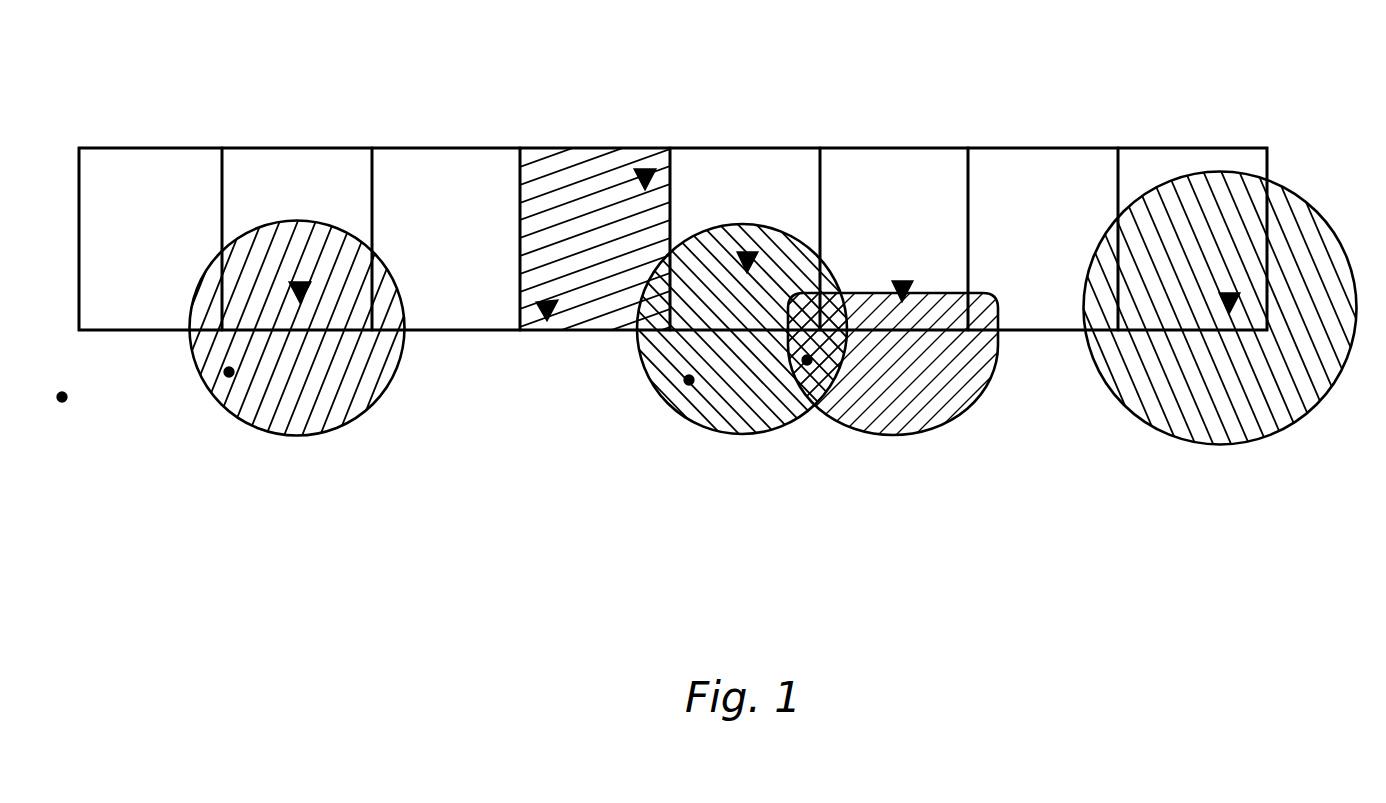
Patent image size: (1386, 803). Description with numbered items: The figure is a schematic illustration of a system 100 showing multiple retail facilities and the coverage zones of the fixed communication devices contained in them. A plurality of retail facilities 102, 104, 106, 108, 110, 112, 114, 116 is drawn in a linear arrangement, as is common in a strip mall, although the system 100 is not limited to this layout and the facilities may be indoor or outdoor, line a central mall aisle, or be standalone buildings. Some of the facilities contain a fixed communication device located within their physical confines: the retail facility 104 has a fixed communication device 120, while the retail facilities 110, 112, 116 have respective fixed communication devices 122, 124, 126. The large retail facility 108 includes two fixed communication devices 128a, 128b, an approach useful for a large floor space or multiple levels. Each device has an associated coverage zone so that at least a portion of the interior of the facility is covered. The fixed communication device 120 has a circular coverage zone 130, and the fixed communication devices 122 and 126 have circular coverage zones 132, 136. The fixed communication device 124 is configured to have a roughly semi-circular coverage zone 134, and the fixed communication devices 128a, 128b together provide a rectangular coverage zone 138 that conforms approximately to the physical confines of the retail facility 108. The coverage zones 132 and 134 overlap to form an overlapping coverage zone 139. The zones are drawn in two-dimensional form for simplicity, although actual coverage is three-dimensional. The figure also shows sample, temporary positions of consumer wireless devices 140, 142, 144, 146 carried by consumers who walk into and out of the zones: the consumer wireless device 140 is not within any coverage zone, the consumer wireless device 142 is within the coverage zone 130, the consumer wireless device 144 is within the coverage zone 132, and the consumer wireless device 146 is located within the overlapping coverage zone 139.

The system 100 is at (196, 672).
The retail facility 102 is at (160, 148).
The retail facility 104 is at (300, 148).
The retail facility 106 is at (443, 148).
The retail facility 108 is at (557, 148).
The retail facility 110 is at (745, 148).
The retail facility 112 is at (892, 148).
The retail facility 114 is at (1048, 148).
The retail facility 116 is at (1172, 148).
The fixed communication device 120 is at (300, 285).
The fixed communication device 122 is at (747, 255).
The fixed communication device 124 is at (902, 284).
The fixed communication device 126 is at (1229, 296).
The fixed communication device 128a is at (555, 305).
The fixed communication device 128b is at (645, 172).
The coverage zone 130 is at (315, 437).
The coverage zone 132 is at (737, 437).
The coverage zone 134 is at (962, 422).
The coverage zone 136 is at (1238, 446).
The coverage zone 138 is at (610, 290).
The overlapping coverage zone 139 is at (830, 368).
The consumer wireless device 140 is at (66, 400).
The consumer wireless device 142 is at (229, 378).
The consumer wireless device 144 is at (690, 386).
The consumer wireless device 146 is at (806, 366).